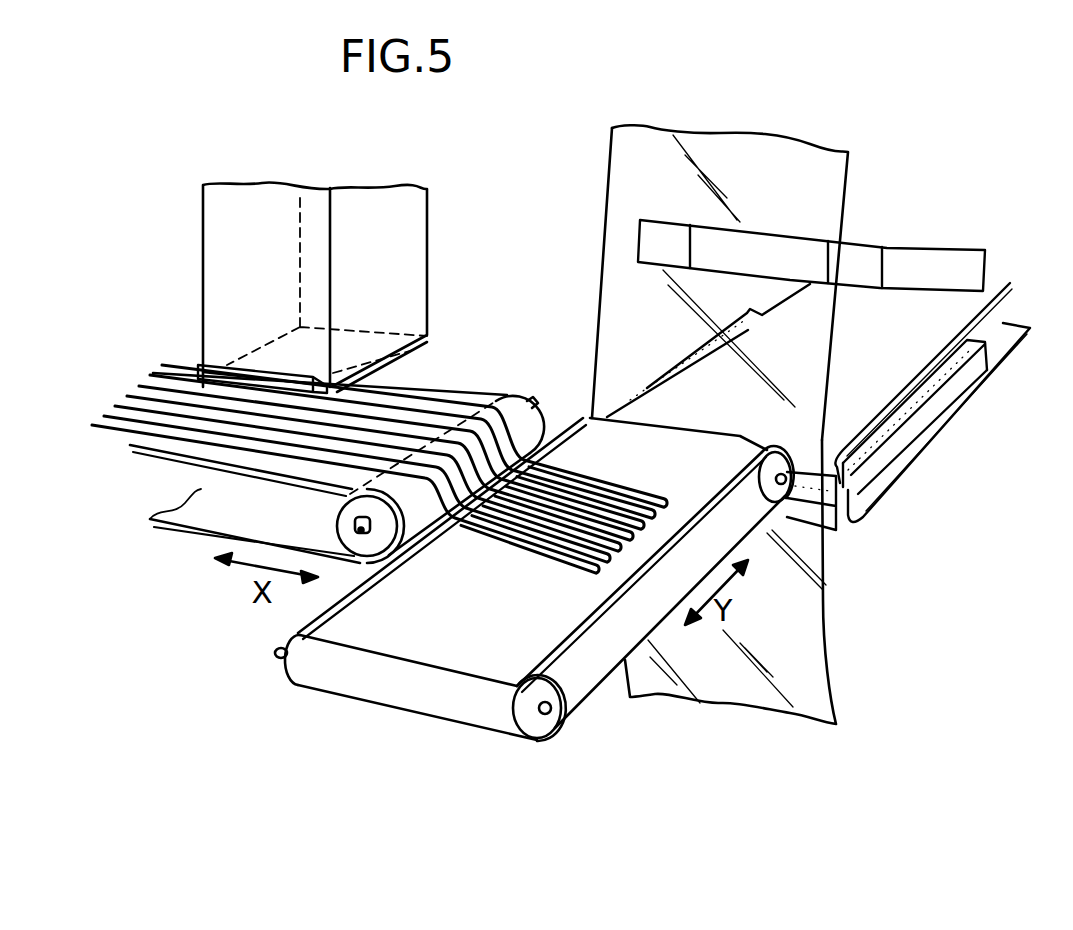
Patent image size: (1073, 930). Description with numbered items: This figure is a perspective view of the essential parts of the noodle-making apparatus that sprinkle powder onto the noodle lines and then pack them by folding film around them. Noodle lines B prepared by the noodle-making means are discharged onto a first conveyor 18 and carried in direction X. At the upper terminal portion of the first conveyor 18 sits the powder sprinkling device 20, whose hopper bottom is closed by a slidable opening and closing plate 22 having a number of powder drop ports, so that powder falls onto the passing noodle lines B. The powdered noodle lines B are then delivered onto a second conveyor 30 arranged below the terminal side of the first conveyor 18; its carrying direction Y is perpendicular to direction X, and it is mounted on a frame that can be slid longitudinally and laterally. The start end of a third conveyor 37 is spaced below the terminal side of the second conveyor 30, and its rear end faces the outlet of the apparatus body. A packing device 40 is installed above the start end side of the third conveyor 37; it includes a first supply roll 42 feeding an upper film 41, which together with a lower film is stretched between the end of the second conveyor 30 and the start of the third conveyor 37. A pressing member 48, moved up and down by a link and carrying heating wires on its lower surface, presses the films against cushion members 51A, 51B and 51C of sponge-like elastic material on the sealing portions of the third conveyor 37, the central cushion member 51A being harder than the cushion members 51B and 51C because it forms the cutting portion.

The first conveyor 18 is at (170, 447).
The powder sprinkling device 20 is at (203, 246).
The opening and closing plate 22 is at (248, 378).
The noodle lines B is at (140, 394).
The second conveyor 30 is at (407, 680).
The third conveyor 37 is at (967, 302).
The packing device 40 is at (892, 358).
The upper film 41 is at (620, 174).
The first supply roll 42 is at (813, 676).
The pressing member 48 is at (962, 258).
The cushion member 51A is at (845, 517).
The cushion member 51B is at (927, 400).
The cushion member 51C is at (647, 388).